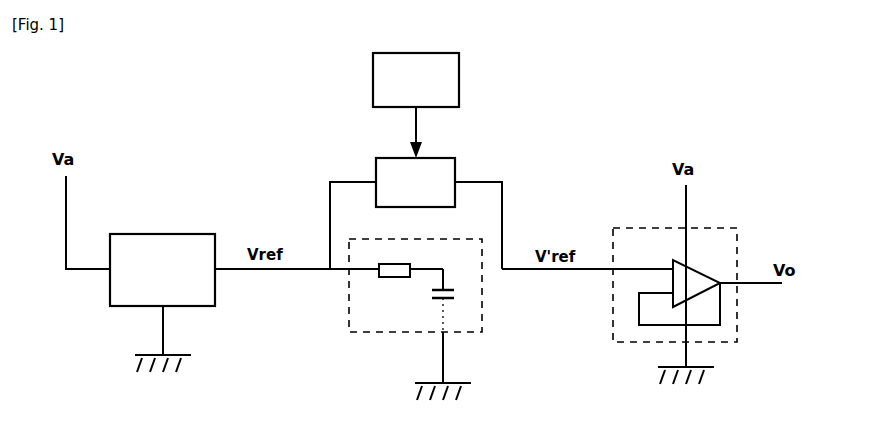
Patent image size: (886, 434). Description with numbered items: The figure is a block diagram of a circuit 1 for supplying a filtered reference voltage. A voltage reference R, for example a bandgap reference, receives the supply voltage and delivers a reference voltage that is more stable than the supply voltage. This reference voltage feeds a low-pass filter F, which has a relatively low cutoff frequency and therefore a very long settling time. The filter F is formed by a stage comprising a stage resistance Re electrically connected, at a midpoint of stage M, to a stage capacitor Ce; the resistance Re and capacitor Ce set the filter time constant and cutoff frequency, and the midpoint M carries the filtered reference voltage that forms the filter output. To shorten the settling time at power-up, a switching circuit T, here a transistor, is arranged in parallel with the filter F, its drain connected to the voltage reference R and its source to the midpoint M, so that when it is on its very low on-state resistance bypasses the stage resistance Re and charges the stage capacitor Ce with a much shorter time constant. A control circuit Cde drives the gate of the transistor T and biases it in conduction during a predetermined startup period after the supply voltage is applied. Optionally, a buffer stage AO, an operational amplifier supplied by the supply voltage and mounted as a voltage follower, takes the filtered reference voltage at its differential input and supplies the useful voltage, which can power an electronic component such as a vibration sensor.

The circuit 1 is at (583, 140).
The voltage reference R is at (162, 270).
The control circuit Cde is at (416, 80).
The switching circuit T is at (415, 182).
The low-pass filter F is at (397, 334).
The stage resistance Re is at (387, 278).
The stage capacitor Ce is at (452, 301).
The midpoint of stage M is at (460, 285).
The buffer stage AO is at (730, 345).